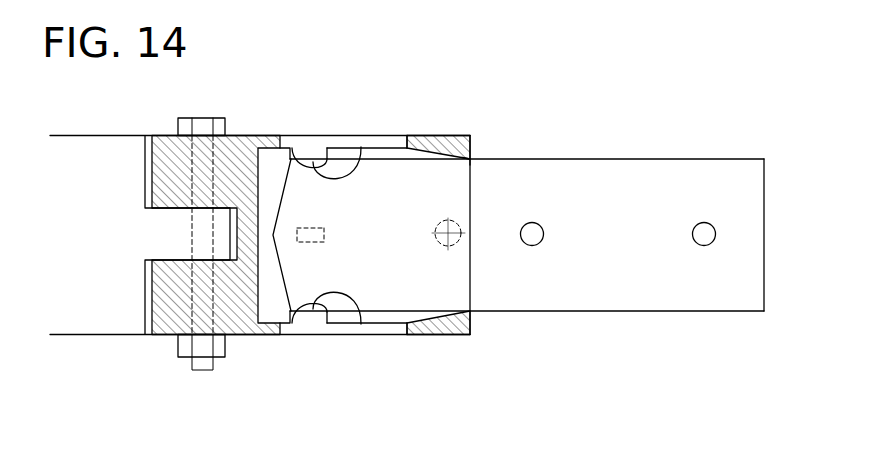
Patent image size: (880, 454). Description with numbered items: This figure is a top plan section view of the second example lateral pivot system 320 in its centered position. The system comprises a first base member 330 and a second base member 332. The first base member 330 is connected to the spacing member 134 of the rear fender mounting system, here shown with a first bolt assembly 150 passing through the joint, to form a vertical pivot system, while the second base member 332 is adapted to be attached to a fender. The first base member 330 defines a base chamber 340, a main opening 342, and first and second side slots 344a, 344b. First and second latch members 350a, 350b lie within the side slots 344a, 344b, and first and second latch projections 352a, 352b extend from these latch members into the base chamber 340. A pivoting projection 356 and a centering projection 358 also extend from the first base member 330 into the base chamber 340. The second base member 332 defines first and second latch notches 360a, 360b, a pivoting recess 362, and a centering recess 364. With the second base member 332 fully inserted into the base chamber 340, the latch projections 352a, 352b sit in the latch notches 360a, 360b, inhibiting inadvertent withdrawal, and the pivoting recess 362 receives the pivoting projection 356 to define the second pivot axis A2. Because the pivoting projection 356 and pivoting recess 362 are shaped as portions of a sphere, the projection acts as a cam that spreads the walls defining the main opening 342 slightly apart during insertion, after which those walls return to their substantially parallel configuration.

The spacing member 134 is at (93, 146).
The first bolt assembly 150 is at (176, 119).
The second example lateral pivot system 320 is at (551, 67).
The first base member 330 is at (447, 150).
The second base member 332 is at (648, 177).
The base chamber 340 is at (423, 137).
The main opening 342 is at (480, 154).
The first side slot 344a is at (287, 331).
The second side slot 344b is at (291, 147).
The first latch member 350a is at (347, 331).
The second latch member 350b is at (348, 140).
The first latch projection 352a is at (362, 324).
The second latch projection 352b is at (361, 147).
The pivoting projection 356 is at (455, 238).
The centering projection 358 is at (318, 227).
The first latch notch 360a is at (305, 302).
The second latch notch 360b is at (300, 165).
The pivoting recess 362 is at (457, 247).
The centering recess 364 is at (325, 238).
The second pivot axis A2 is at (449, 233).